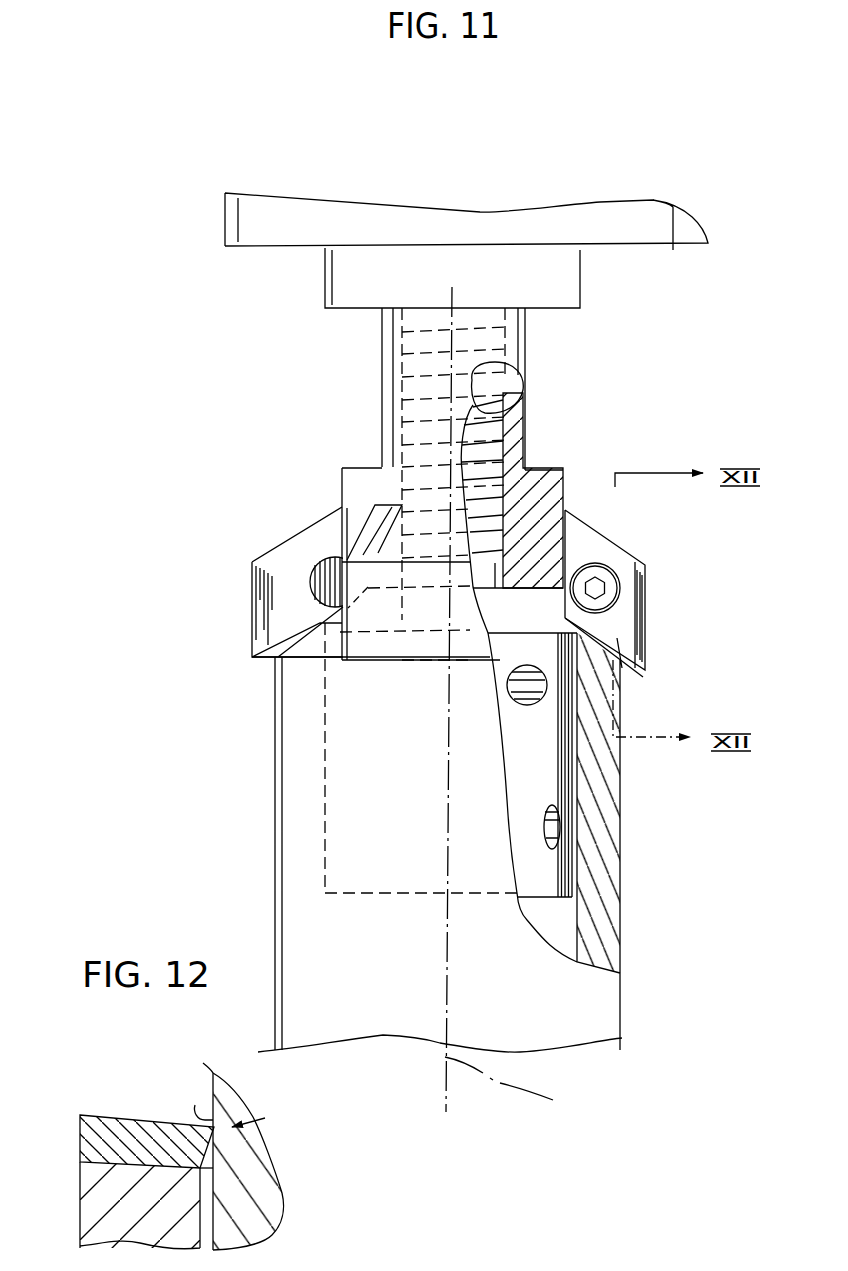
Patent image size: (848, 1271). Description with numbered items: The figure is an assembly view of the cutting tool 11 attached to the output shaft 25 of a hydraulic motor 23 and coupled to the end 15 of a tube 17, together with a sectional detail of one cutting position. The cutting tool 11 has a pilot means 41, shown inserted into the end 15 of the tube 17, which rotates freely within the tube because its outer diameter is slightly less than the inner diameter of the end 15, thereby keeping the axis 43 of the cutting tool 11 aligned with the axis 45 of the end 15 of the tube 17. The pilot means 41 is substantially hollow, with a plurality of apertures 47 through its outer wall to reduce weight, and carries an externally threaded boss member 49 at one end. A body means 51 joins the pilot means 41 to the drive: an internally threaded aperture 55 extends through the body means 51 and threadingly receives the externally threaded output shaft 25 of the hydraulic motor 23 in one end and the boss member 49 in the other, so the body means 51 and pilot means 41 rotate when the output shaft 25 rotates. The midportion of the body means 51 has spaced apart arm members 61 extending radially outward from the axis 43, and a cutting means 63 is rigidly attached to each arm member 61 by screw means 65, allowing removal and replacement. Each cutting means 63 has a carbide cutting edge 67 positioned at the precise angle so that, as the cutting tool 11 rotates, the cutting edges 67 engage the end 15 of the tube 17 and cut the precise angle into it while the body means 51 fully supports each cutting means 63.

In FIG. 11, the cutting tool 11 is at (697, 433).
In FIG. 11, the end of the tube 15 is at (617, 697).
In FIG. 12, the end of the tube 15 is at (208, 1083).
In FIG. 11, the tube 17 is at (612, 945).
In FIG. 12, the tube 17 is at (263, 1197).
In FIG. 11, the hydraulic motor 23 is at (657, 207).
In FIG. 11, the output shaft 25 is at (505, 409).
In FIG. 11, the pilot means 41 is at (540, 783).
In FIG. 11, the axis of the cutting tool 43 is at (450, 753).
In FIG. 11, the axis of the end of the tube 45 is at (517, 1086).
In FIG. 11, the apertures 47 is at (523, 706).
In FIG. 11, the boss member 49 is at (520, 470).
In FIG. 11, the body means 51 is at (524, 436).
In FIG. 12, the body means 51 is at (92, 1217).
In FIG. 11, the internally threaded aperture 55 is at (503, 363).
In FIG. 11, the arm members 61 is at (290, 555).
In FIG. 12, the arm members 61 is at (93, 1188).
In FIG. 11, the cutting means 63 is at (640, 677).
In FIG. 12, the cutting means 63 is at (117, 1117).
In FIG. 11, the screw means 65 is at (327, 587).
In FIG. 12, the cutting edge 67 is at (265, 1120).